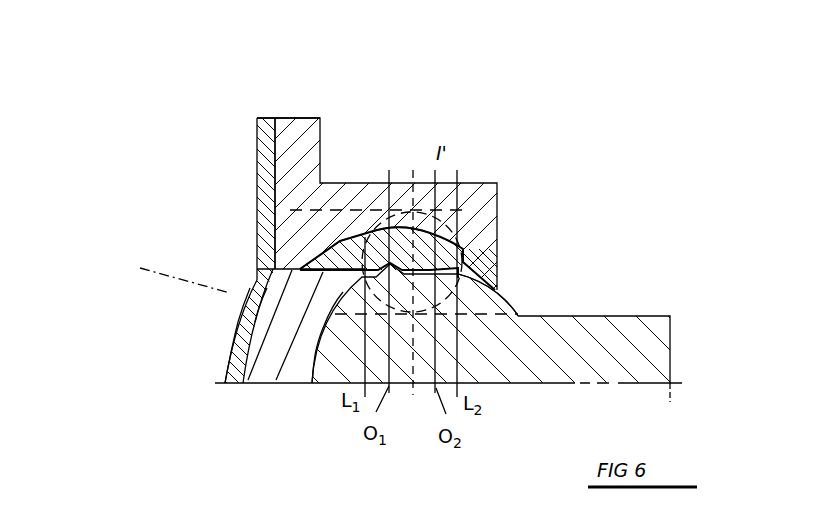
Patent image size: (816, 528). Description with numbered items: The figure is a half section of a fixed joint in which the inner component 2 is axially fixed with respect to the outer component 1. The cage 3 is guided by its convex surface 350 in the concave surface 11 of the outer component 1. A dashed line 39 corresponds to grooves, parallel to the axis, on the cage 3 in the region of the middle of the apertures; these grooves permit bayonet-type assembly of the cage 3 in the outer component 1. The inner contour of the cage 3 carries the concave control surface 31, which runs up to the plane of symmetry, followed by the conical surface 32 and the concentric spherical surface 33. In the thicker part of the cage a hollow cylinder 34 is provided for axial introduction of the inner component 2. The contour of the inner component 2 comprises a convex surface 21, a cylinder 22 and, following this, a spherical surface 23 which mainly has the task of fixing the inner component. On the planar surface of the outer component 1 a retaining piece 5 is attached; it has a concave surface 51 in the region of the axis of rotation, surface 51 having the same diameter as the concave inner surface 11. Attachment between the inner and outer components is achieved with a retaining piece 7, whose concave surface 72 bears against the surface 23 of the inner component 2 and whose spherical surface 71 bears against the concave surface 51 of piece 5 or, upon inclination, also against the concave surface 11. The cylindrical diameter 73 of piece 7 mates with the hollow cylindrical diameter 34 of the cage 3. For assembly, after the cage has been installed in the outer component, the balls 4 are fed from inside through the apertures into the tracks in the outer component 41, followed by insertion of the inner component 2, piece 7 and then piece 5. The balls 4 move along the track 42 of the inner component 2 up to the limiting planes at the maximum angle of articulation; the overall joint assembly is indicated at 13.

The outer component 1 is at (290, 137).
The inner component 2 is at (595, 325).
The cage 3 is at (482, 262).
The balls 4 is at (448, 240).
The retaining piece 5 is at (265, 223).
The retaining piece 7 is at (330, 325).
The concave surface 11 is at (326, 250).
The seal assembly 13 is at (207, 46).
The convex surface 21 is at (508, 302).
The cylinder 22 is at (330, 360).
The spherical surface 23 is at (308, 349).
The concave control surface 31 is at (490, 290).
The conical surface 32 is at (352, 330).
The concentric spherical surface 33 is at (345, 300).
The hollow cylinder 34 is at (235, 255).
The dashed line 39 is at (352, 238).
The tracks in the outer component 41 is at (470, 256).
The track of the inner component 42 is at (488, 300).
The concave surface 51 is at (255, 327).
The spherical surface 71 is at (253, 307).
The concave surface 72 is at (318, 347).
The cylindrical diameter 73 is at (336, 243).
The convex surface 350 is at (473, 262).